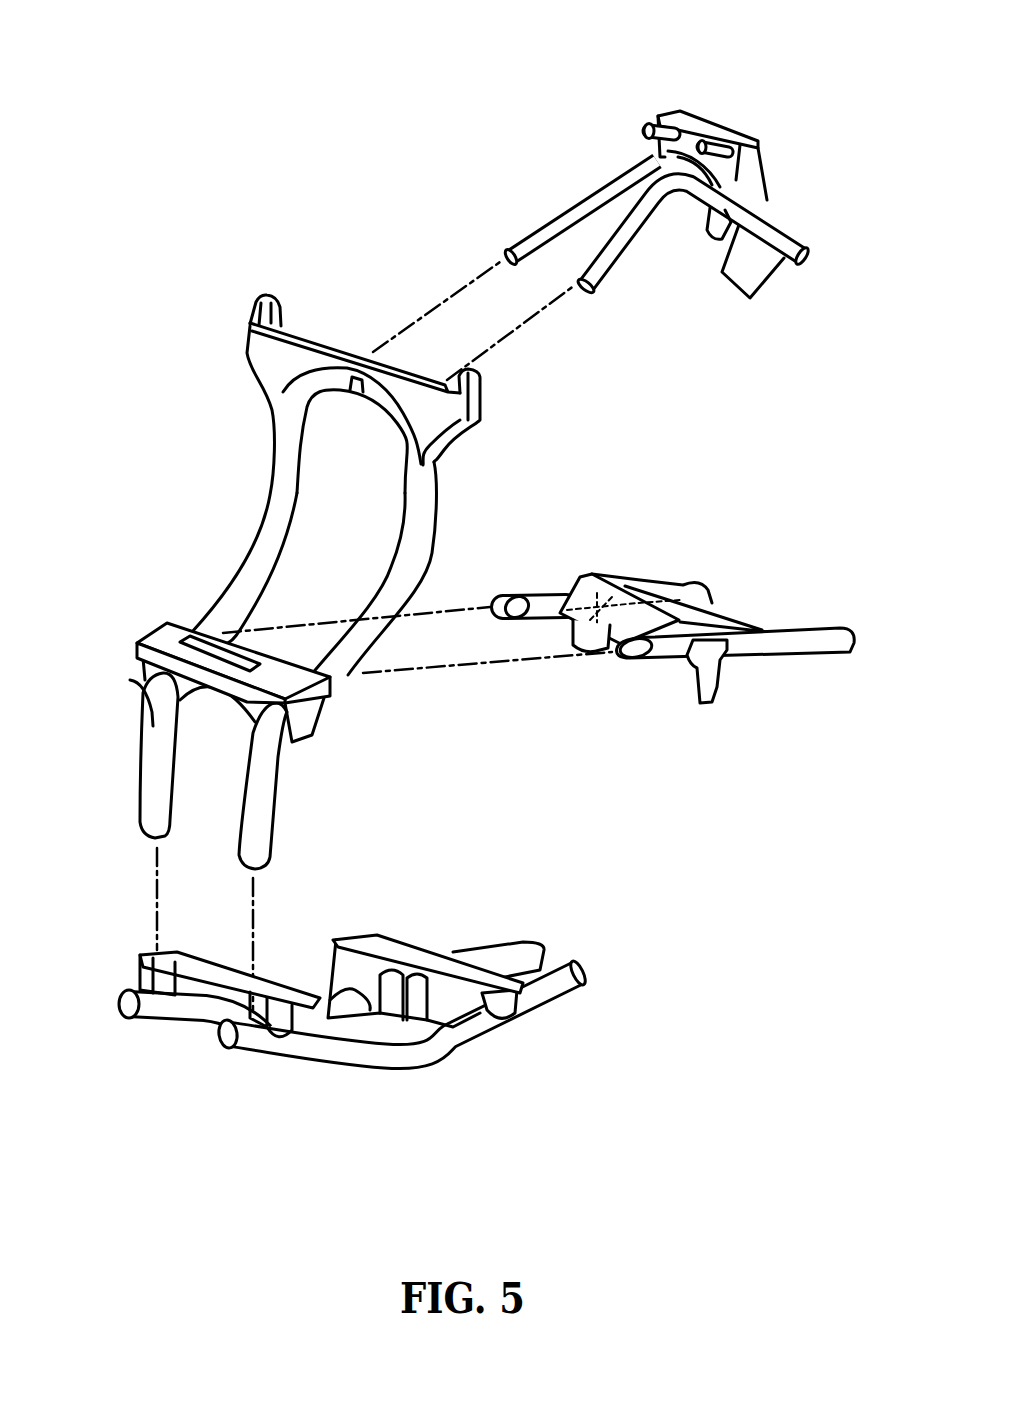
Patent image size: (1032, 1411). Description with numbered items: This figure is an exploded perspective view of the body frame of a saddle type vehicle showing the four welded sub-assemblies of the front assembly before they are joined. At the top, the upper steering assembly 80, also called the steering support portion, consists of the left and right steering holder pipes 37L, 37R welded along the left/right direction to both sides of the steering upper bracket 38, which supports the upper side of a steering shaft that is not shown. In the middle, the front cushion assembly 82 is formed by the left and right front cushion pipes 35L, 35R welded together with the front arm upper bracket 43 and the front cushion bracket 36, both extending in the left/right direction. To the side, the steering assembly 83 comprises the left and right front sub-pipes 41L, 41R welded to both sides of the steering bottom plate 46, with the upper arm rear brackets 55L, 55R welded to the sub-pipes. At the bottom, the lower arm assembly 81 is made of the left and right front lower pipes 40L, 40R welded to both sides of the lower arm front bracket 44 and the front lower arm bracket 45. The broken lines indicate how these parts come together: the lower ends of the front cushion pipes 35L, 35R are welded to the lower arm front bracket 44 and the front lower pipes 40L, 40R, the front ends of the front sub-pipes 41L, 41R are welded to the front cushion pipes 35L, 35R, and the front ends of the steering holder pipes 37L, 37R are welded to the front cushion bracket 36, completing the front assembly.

The left front cushion pipe 35L is at (420, 540).
The right front cushion pipe 35R is at (268, 503).
The front cushion bracket 36 is at (298, 353).
The left steering holder pipe 37L is at (623, 257).
The right steering holder pipe 37R is at (540, 223).
The steering upper bracket 38 is at (710, 123).
The left front lower pipe 40L is at (353, 1060).
The right front lower pipe 40R is at (165, 1013).
The left front sub-pipe 41L is at (778, 630).
The right front sub-pipe 41R is at (680, 578).
The front arm upper bracket 43 is at (137, 642).
The lower arm front bracket 44 is at (213, 965).
The front lower arm bracket 45 is at (450, 1007).
The steering bottom plate 46 is at (617, 578).
The left upper arm rear bracket 55L is at (693, 700).
The right upper arm rear bracket 55R is at (553, 656).
The upper steering assembly 80 is at (674, 191).
The lower arm assembly 81 is at (384, 1008).
The front cushion assembly 82 is at (305, 555).
The steering assembly 83 is at (686, 625).